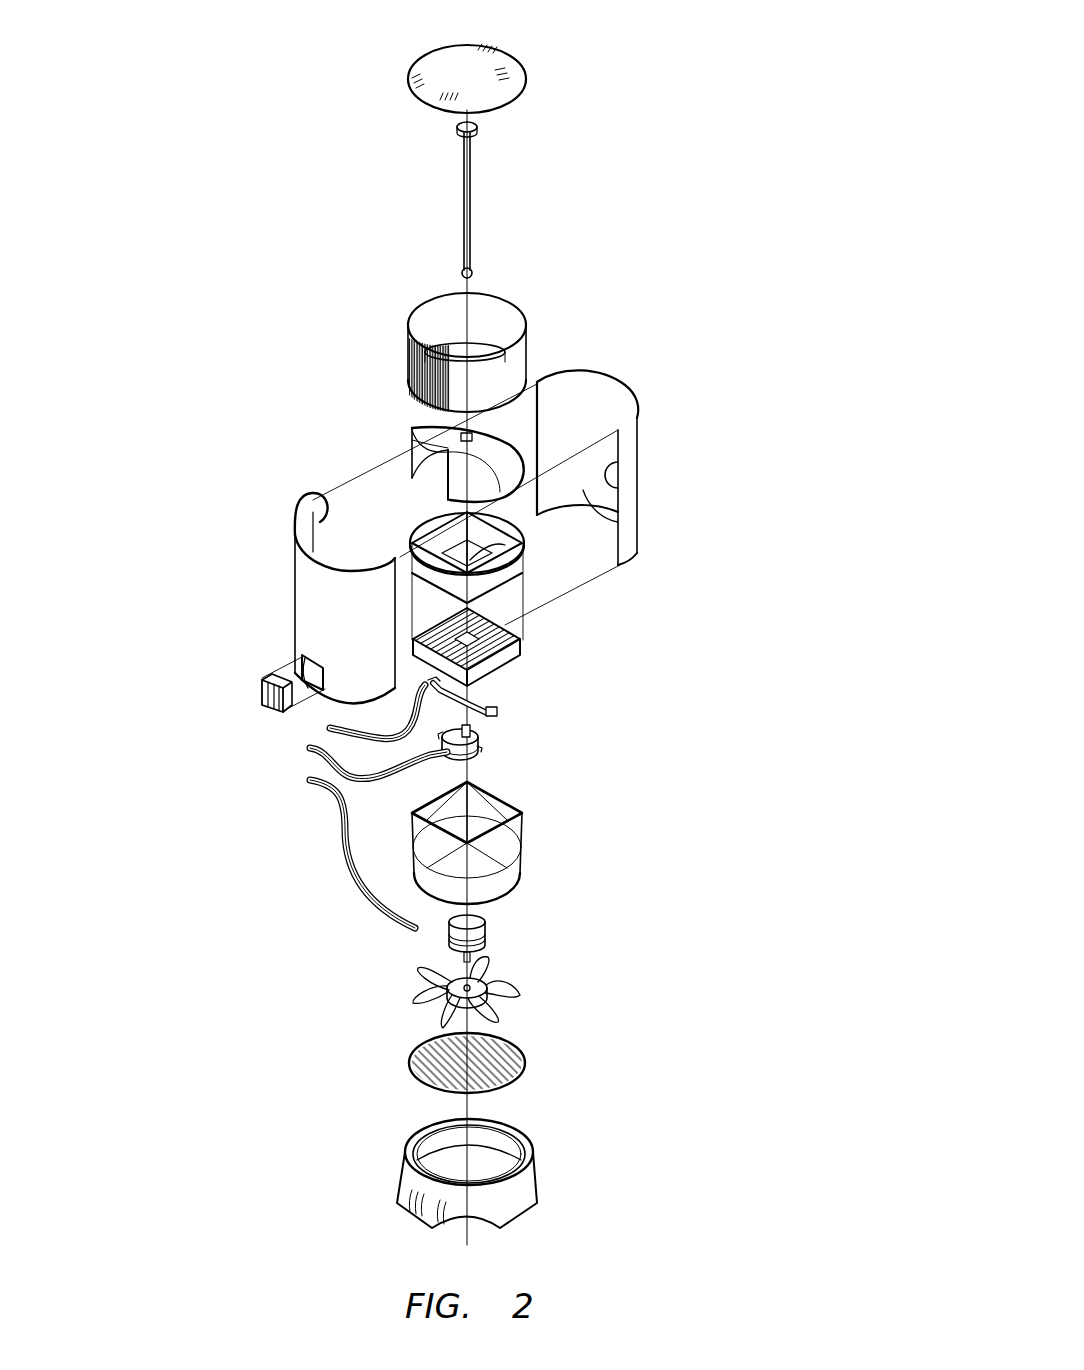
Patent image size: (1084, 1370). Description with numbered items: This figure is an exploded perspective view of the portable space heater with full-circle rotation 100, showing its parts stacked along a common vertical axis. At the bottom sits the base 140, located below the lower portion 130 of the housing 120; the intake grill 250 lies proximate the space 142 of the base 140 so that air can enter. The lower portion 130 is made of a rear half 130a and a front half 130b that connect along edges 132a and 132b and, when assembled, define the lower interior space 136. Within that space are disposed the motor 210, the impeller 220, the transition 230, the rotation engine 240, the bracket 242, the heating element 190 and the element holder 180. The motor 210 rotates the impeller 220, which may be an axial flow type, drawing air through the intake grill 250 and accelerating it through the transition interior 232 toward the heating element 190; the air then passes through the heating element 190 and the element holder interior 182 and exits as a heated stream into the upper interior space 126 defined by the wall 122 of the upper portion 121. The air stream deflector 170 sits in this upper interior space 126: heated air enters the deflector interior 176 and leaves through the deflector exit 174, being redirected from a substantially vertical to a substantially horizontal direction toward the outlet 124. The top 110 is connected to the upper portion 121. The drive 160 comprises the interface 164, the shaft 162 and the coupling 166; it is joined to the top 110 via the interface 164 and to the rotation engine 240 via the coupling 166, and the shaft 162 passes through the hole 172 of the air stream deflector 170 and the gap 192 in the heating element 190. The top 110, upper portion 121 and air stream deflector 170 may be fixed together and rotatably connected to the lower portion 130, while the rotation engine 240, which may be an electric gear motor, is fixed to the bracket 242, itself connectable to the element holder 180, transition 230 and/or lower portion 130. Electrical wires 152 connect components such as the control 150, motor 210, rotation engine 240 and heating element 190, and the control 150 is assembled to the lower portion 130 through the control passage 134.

The portable space heater with 360° rotation 100 is at (745, 75).
The top 110 is at (506, 58).
The housing 120 is at (490, 424).
The upper portion 121 is at (235, 145).
The wall 122 is at (457, 332).
The outlet 124 is at (407, 373).
The upper interior space 126 is at (432, 312).
The lower portion 130 is at (490, 498).
The rear half 130a is at (640, 432).
The front half 130b is at (295, 572).
The edge 132a is at (624, 475).
The edge 132b is at (298, 508).
The control passage 134 is at (302, 665).
The lower interior space 136 is at (590, 498).
The base 140 is at (538, 1180).
The space 142 is at (485, 1162).
The control 150 is at (263, 712).
The electrical wires 152 is at (330, 724).
The drive 160 is at (630, 118).
The shaft 162 is at (470, 200).
The interface 164 is at (478, 127).
The coupling 166 is at (475, 270).
The air stream deflector 170 is at (222, 355).
The hole 172 is at (412, 428).
The deflector exit 174 is at (428, 468).
The deflector interior 176 is at (410, 478).
The element holder 180 is at (525, 568).
The element holder interior 182 is at (525, 543).
The heating element 190 is at (490, 660).
The gap 192 is at (523, 610).
The motor 210 is at (487, 932).
The impeller 220 is at (522, 1003).
The transition 230 is at (523, 878).
The transition interior 232 is at (473, 823).
The rotation engine 240 is at (478, 750).
The bracket 242 is at (492, 713).
The intake grill 250 is at (526, 1060).